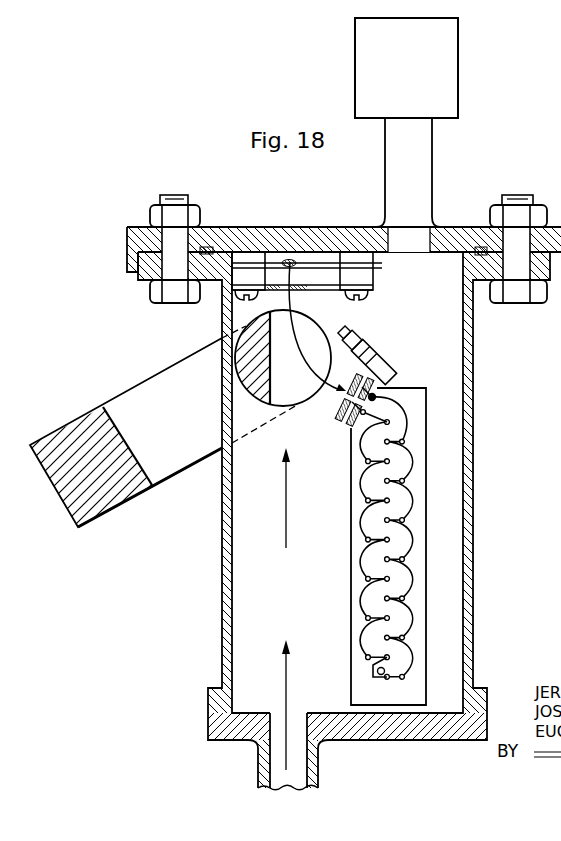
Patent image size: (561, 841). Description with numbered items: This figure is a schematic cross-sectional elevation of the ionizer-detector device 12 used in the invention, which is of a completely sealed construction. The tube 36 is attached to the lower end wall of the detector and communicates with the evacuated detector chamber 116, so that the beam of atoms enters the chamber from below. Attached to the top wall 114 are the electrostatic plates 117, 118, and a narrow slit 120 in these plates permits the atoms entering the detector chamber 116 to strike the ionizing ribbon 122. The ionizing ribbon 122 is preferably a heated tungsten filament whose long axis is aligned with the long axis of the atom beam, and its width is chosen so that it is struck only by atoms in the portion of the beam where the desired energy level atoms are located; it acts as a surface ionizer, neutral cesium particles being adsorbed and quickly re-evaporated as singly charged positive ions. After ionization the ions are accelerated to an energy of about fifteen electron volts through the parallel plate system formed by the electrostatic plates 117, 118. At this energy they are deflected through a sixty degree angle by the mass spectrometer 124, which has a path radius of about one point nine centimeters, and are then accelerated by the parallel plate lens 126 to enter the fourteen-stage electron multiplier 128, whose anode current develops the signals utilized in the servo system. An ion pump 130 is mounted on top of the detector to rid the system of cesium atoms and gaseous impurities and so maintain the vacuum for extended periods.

The vaporizer vessel assembly 12 is at (344, 521).
The tube 36 is at (318, 778).
The top wall 114 is at (334, 226).
The detector chamber 116 is at (456, 570).
The electrostatic plate 117 is at (382, 268).
The electrostatic plate 118 is at (372, 293).
The narrow slit 120 is at (288, 286).
The ionizing ribbon 122 is at (290, 262).
The mass spectrometer 124 is at (186, 425).
The parallel plate lens 126 is at (392, 354).
The electron multiplier 128 is at (417, 433).
The ion pump 130 is at (427, 76).